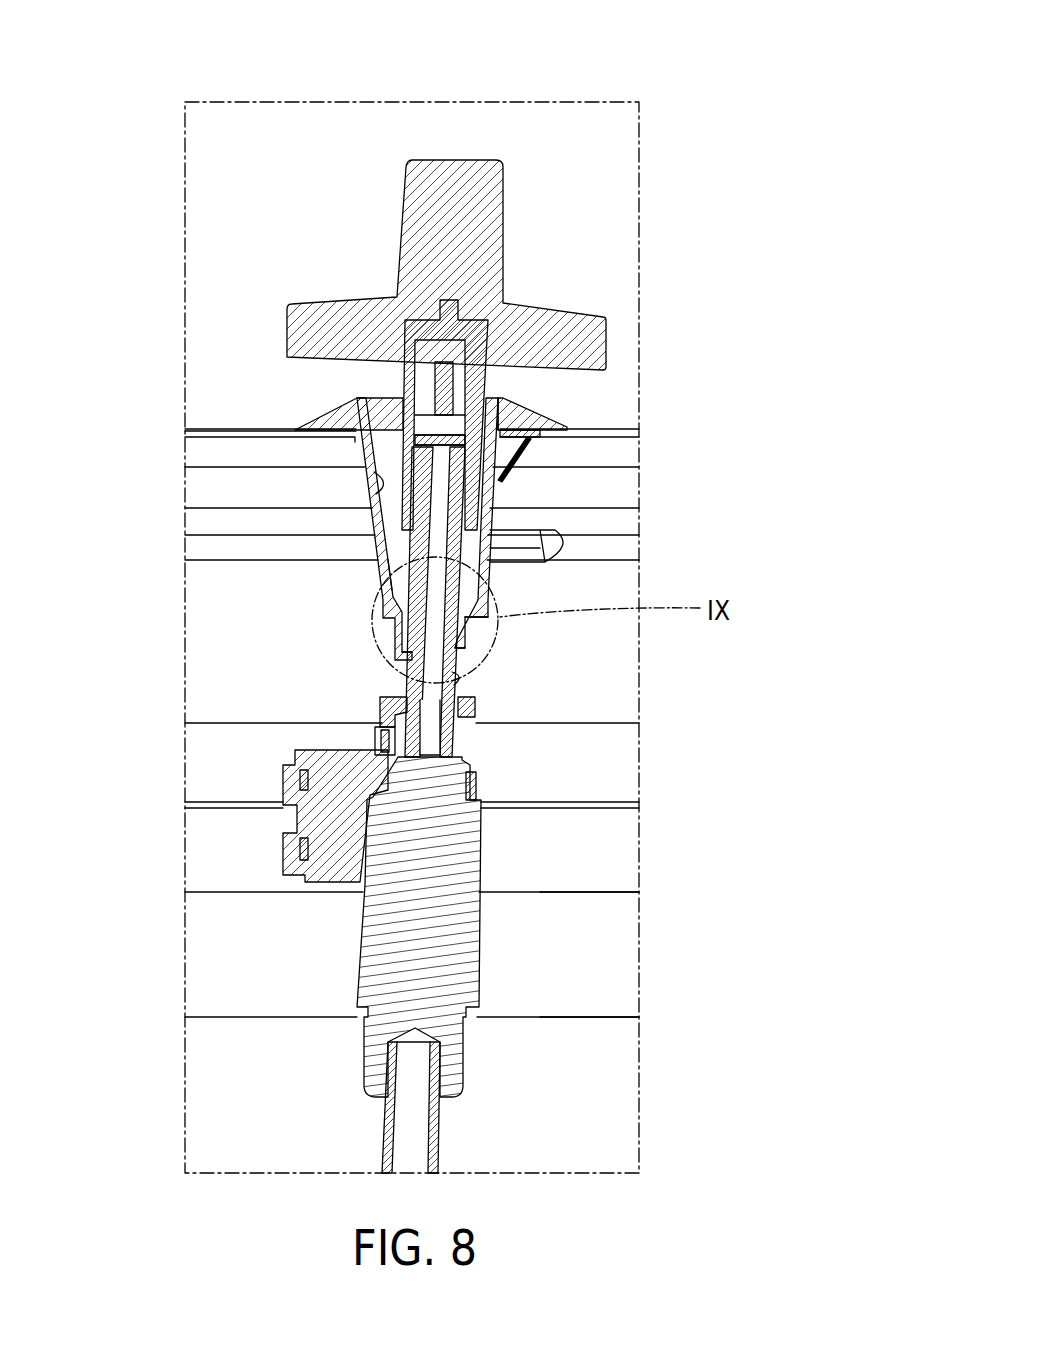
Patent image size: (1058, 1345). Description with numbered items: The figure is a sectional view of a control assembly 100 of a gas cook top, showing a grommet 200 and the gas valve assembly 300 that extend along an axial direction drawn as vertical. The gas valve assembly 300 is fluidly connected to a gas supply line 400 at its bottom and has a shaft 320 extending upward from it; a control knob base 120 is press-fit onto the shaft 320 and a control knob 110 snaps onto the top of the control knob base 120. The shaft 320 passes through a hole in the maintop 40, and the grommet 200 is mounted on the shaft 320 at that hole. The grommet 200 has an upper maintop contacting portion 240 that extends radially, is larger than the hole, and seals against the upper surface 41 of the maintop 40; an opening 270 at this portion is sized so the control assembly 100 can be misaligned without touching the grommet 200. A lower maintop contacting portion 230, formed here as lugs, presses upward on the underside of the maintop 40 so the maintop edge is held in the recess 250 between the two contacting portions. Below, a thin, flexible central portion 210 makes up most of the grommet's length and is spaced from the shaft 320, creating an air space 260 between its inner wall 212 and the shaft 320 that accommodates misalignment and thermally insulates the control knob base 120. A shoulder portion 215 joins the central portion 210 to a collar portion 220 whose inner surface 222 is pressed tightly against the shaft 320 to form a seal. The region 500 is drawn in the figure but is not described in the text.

The control assembly 100 is at (454, 133).
The control knob 110 is at (462, 242).
The control knob base 120 is at (490, 325).
The grommet 200 is at (492, 505).
The central portion 210 is at (490, 552).
The inner wall 212 is at (385, 492).
The shoulder portion 215 is at (468, 627).
The collar portion 220 is at (462, 668).
The inner surface 222 is at (458, 683).
The lower maintop contacting portion 230 is at (505, 453).
The upper maintop contacting portion 240 is at (507, 412).
The recess 250 is at (515, 433).
The air space 260 is at (393, 553).
The opening 270 is at (383, 397).
The gas valve assembly 300 is at (448, 835).
The shaft 320 is at (452, 732).
The gas supply line 400 is at (440, 1127).
The housing 500 is at (559, 948).
The maintop 40 is at (217, 430).
The upper surface 41 is at (242, 430).